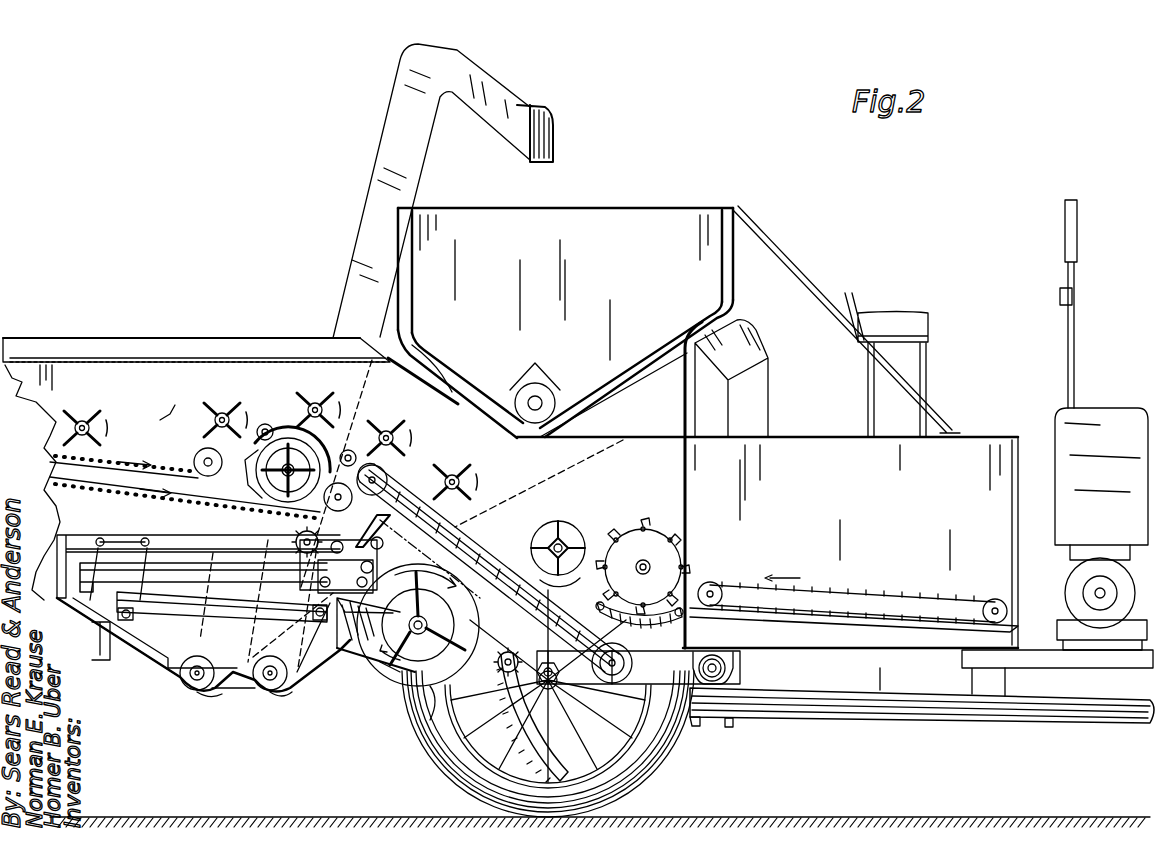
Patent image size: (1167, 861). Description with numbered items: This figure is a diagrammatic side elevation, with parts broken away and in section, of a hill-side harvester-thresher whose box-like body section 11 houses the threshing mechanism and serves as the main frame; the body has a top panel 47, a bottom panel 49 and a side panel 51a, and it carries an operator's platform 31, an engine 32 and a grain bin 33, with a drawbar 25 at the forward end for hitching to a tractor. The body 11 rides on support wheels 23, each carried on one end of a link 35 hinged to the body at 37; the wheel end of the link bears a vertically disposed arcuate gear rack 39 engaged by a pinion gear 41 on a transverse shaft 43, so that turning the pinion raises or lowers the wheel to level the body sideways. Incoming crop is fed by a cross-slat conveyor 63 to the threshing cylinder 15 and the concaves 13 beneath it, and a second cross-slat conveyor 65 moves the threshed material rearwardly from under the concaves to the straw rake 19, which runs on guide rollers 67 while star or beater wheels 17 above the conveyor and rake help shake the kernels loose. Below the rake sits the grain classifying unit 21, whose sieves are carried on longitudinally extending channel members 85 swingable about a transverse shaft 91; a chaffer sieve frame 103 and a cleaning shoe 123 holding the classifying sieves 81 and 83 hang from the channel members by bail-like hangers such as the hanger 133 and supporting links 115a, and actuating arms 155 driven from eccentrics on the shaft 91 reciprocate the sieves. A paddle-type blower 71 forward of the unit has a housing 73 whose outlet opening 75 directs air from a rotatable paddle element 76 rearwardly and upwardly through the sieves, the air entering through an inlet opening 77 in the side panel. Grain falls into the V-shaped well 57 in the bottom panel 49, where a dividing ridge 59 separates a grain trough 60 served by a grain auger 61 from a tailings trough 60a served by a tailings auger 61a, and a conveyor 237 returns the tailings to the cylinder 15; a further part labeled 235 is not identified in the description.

The body section 11 is at (212, 358).
The concaves 13 is at (640, 620).
The threshing cylinder 15 is at (655, 528).
The star or beater wheels 17 is at (86, 414).
The straw rake 19 is at (188, 467).
The grain classifying unit 21 is at (202, 524).
The support wheels 23 is at (672, 750).
The drawbar 25 is at (1113, 708).
The platform 31 is at (836, 436).
The engine 32 is at (1118, 420).
The grain bin 33 is at (650, 215).
The link 35 is at (675, 660).
The hinged attachment point 37 is at (730, 672).
The arcuate gear rack 39 is at (526, 700).
The pinion gear 41 is at (512, 653).
The shaft 43 is at (530, 664).
The top panel 47 is at (118, 350).
The bottom panel 49 is at (805, 622).
The side panel 51a is at (159, 405).
The V-shaped well 57 is at (176, 680).
The dividing ridge 59 is at (235, 682).
The grain trough 60 is at (270, 692).
The tailings trough 60a is at (195, 692).
The grain auger 61 is at (284, 686).
The tailings auger 61a is at (222, 692).
The cross-slat conveyor 63 is at (840, 598).
The second cross-slat conveyor 65 is at (490, 545).
The guide rollers 67 is at (208, 450).
The paddle-type blower 71 is at (395, 682).
The blower housing 73 is at (432, 700).
The outlet opening 75 is at (345, 660).
The rotatable paddle element 76 is at (380, 675).
The air inlet opening 77 is at (408, 672).
The upper classifying sieve 81 is at (242, 575).
The lower classifying sieve 83 is at (198, 570).
The channel members 85 is at (80, 535).
The shaft 91 is at (298, 530).
The chaffer sieve frame 103 is at (172, 545).
The supporting links 115a is at (380, 556).
The cleaning shoe 123 is at (212, 630).
The bail-like hanger 133 is at (345, 576).
The actuating arms 155 is at (328, 530).
The elevator chute 235 is at (360, 294).
The conveyor 237 is at (577, 462).